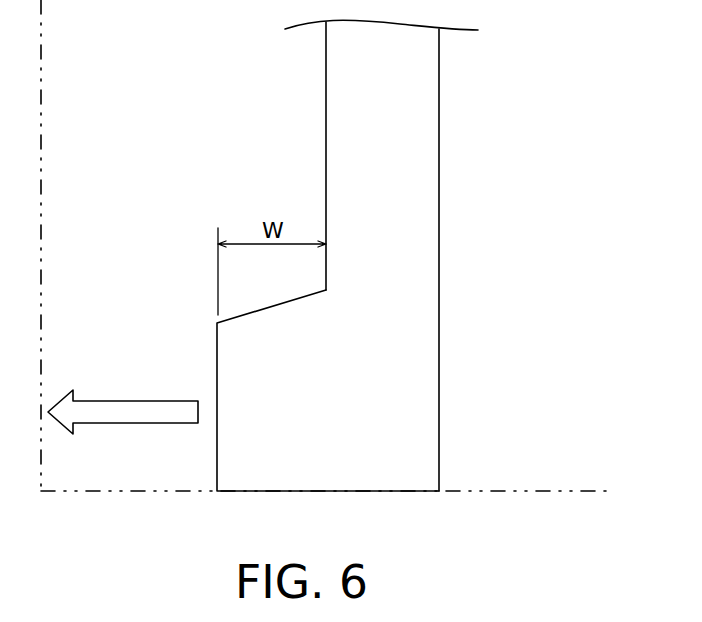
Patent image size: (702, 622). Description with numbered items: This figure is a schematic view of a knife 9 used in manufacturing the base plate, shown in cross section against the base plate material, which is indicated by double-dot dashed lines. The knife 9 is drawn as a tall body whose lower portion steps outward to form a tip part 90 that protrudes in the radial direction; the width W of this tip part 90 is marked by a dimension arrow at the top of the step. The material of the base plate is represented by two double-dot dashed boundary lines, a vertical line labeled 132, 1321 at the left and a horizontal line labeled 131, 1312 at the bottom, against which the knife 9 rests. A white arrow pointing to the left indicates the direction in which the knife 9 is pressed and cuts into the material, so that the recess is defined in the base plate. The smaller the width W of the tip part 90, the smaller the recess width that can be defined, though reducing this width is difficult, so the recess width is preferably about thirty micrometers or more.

The knife 9 is at (450, 159).
The tip part 90 is at (237, 362).
The side boundary line 132 is at (101, 245).
The side boundary surface 1321 is at (41, 142).
The bottom boundary line 131 is at (336, 464).
The bottom boundary surface 1312 is at (480, 491).